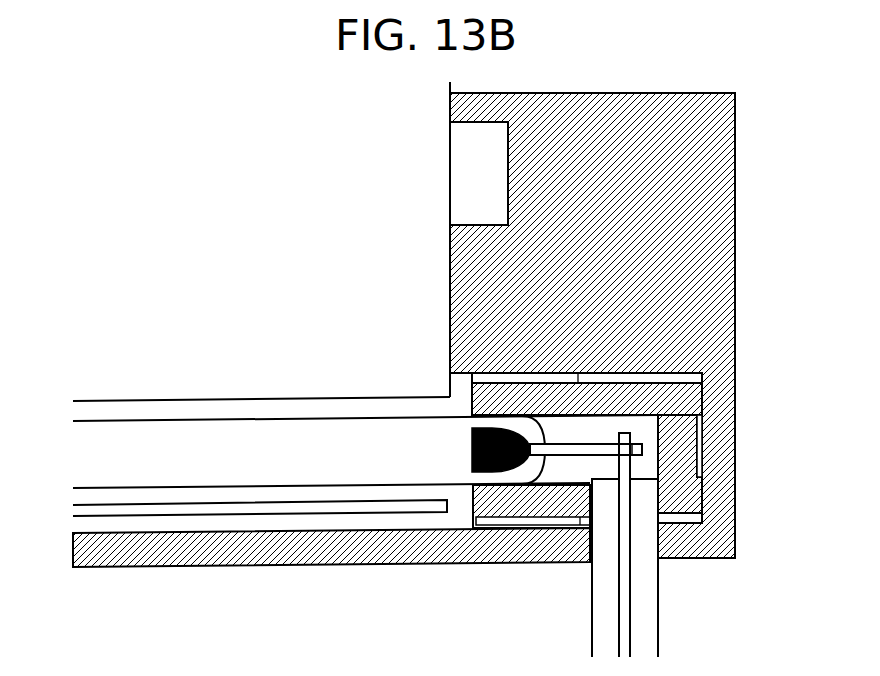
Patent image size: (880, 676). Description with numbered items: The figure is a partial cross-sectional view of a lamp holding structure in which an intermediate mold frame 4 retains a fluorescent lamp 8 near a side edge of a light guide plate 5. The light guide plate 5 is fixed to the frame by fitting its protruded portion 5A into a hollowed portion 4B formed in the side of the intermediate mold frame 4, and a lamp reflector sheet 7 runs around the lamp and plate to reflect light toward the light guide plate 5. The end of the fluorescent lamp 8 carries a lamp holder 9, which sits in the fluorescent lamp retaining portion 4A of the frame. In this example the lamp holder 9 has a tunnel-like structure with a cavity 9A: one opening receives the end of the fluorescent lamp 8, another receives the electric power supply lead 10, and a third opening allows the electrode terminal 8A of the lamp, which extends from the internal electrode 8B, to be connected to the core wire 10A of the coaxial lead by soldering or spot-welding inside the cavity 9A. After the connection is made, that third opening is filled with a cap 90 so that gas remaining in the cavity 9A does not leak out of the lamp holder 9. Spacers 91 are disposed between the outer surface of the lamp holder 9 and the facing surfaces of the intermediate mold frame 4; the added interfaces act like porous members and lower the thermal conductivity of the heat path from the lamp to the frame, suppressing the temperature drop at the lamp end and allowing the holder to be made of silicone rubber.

The intermediate mold frame 4 is at (613, 233).
The fluorescent lamp retaining portion 4A is at (457, 519).
The hollowed portion 4B is at (512, 148).
The light guide plate 5 is at (238, 245).
The protruded portion 5A is at (477, 175).
The lamp reflector sheet 7 is at (152, 510).
The fluorescent lamp 8 is at (269, 475).
The electrode terminal 8A is at (633, 450).
The electrode 8B is at (472, 456).
The lamp holder 9 is at (668, 398).
The cavity 9A is at (579, 468).
The electric power supply lead 10 is at (647, 593).
The core wire 10A is at (625, 465).
The cap 90 is at (680, 437).
The spacer 91 is at (472, 380).